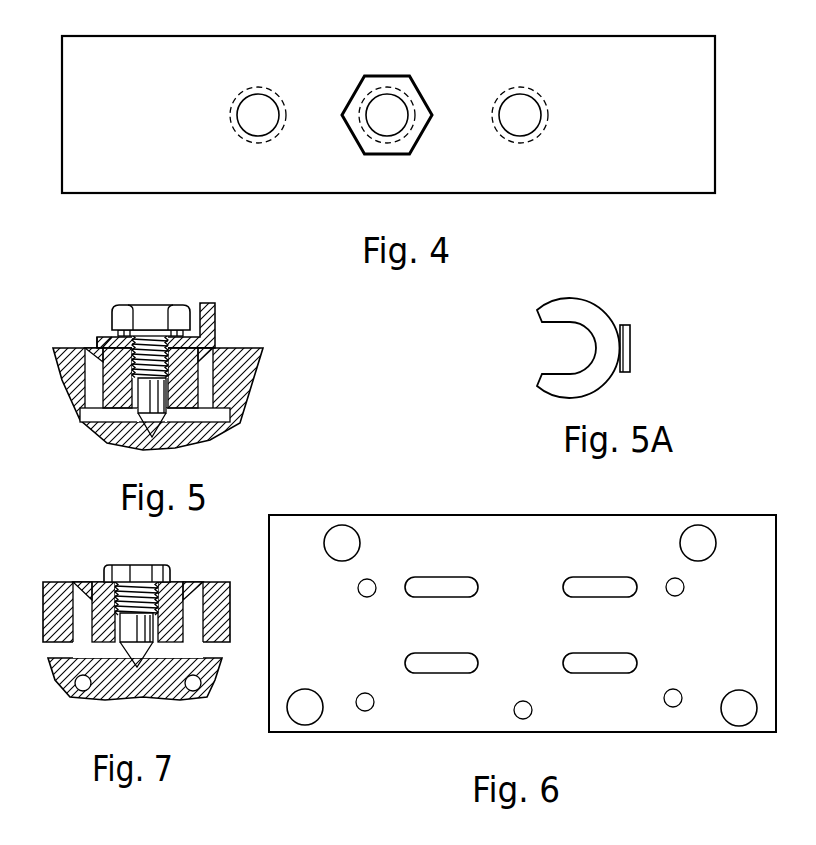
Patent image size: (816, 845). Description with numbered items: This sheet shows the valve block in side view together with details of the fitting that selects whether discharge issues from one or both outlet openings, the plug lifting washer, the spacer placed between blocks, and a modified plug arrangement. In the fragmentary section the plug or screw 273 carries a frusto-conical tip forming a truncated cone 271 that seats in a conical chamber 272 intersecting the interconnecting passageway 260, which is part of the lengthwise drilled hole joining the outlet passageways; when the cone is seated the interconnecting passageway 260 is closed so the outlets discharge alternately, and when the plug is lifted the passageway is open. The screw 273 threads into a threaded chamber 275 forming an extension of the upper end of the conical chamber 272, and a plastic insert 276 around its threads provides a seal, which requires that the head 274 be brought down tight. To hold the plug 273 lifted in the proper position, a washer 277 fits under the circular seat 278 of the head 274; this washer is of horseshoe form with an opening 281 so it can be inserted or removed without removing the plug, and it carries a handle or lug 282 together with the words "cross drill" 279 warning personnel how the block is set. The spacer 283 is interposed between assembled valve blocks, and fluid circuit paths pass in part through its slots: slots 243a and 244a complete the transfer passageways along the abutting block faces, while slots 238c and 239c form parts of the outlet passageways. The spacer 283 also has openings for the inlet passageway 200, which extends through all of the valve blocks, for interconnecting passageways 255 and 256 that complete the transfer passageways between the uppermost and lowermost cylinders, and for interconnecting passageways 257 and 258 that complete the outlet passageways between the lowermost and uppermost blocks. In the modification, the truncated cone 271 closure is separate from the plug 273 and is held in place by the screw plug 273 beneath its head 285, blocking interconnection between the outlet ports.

In FIG. 4, the head 274 is at (400, 76).
In FIG. 5, the head 274 is at (162, 305).
In FIG. 5, the circular seat 278 is at (120, 333).
In FIG. 5, the handle or lug 282 is at (208, 304).
In FIG. 5A, the handle or lug 282 is at (632, 342).
In FIG. 5, the washer 277 is at (100, 342).
In FIG. 5, the plastic insert 276 is at (168, 380).
In FIG. 5, the plug or screw 273 is at (160, 408).
In FIG. 7, the plug or screw 273 is at (132, 592).
In FIG. 5, the threaded chamber 275 is at (137, 388).
In FIG. 5, the truncated cone 271 is at (165, 420).
In FIG. 5, the conical chamber 272 is at (133, 423).
In FIG. 5, the interconnecting passageway 260 is at (172, 425).
In FIG. 7, the interconnecting passageway 260 is at (170, 655).
In FIG. 5A, the "cross drill" index 279 is at (558, 308).
In FIG. 5A, the opening 281 is at (557, 347).
In FIG. 7, the head 285 is at (162, 567).
In FIG. 6, the spacer 283 is at (412, 487).
In FIG. 6, the interconnecting passageway 257 is at (363, 578).
In FIG. 6, the slot 238c is at (442, 578).
In FIG. 6, the slot 239c is at (613, 578).
In FIG. 6, the interconnecting passageway 258 is at (684, 590).
In FIG. 6, the slot 243a is at (452, 655).
In FIG. 6, the slot 244a is at (625, 655).
In FIG. 6, the interconnecting passageway 255 is at (375, 707).
In FIG. 6, the inlet passageway 200 is at (535, 707).
In FIG. 6, the interconnecting passageway 256 is at (678, 707).